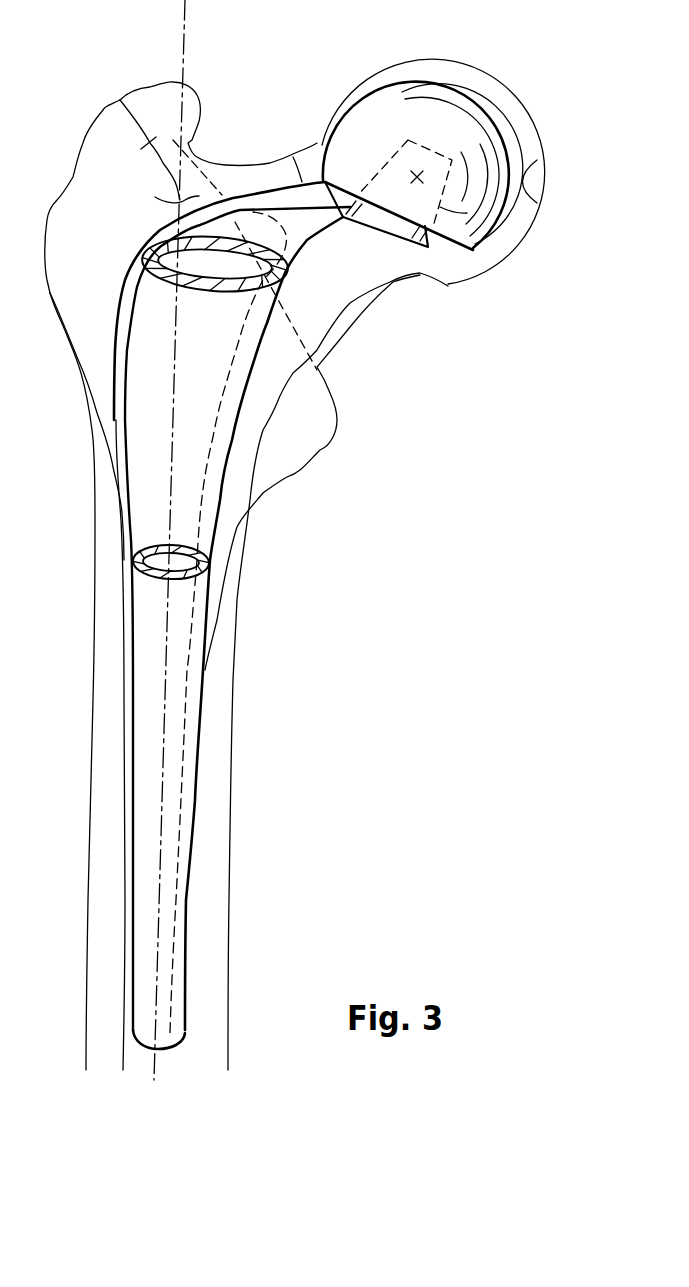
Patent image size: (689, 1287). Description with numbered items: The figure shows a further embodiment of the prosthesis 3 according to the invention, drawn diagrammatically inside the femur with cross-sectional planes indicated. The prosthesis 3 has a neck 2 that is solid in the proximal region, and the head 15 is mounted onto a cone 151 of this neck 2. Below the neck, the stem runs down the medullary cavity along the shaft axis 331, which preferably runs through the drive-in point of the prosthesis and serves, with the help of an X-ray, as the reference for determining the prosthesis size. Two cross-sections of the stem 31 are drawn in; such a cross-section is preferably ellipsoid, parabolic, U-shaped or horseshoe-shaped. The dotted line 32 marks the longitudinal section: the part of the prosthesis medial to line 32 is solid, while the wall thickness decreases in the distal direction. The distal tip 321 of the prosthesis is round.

The neck 2 is at (291, 155).
The prosthesis 3 is at (133, 835).
The cross-section of the stem 31 is at (218, 290).
The line 32 is at (180, 758).
The tip 321 is at (162, 1049).
The shaft axis 331 is at (185, 23).
The head 15 is at (440, 103).
The cone 151 is at (510, 240).